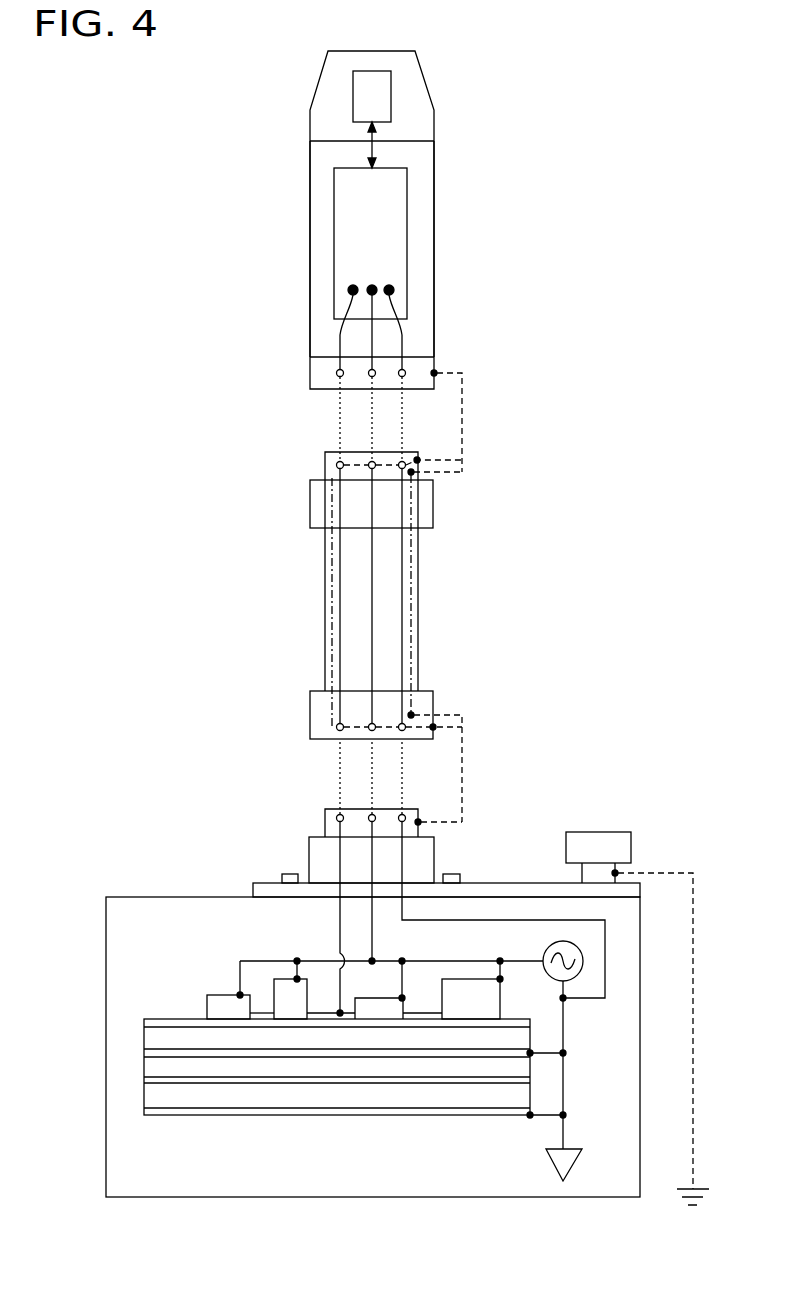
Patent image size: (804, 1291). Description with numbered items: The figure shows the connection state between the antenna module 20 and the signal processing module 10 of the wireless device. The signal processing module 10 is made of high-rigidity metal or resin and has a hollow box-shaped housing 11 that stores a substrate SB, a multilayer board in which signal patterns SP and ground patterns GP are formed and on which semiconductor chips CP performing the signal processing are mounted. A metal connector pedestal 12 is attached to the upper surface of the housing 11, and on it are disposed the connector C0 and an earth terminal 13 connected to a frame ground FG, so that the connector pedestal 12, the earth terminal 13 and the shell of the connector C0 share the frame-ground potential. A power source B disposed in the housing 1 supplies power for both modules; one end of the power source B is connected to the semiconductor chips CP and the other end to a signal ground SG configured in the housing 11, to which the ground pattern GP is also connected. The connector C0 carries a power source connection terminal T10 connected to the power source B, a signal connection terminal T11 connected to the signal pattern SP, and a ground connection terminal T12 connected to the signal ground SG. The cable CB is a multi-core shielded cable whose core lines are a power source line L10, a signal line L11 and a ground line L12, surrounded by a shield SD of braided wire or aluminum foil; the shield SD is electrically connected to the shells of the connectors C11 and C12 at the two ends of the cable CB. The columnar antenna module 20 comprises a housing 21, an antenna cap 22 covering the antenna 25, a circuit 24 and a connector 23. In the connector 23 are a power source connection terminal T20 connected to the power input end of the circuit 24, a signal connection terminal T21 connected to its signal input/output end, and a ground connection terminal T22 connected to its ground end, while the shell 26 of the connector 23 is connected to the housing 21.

The housing 1 is at (630, 140).
The signal processing module 10 is at (80, 874).
The housing 11 is at (106, 990).
The connector pedestal 12 is at (513, 893).
The earth terminal 13 is at (610, 832).
The antenna module 20 is at (247, 107).
The housing 21 is at (434, 230).
The antenna cap 22 is at (424, 78).
The connector 23 is at (436, 364).
The circuit 24 is at (334, 216).
The antenna 25 is at (375, 86).
The shell 26 is at (438, 373).
The power source connection terminal T20 is at (369, 377).
The signal connection terminal T21 is at (336, 374).
The ground connection terminal T22 is at (405, 378).
The power source connection terminal T10 is at (369, 815).
The signal connection terminal T11 is at (337, 819).
The ground connection terminal T12 is at (405, 813).
The connector C12 is at (310, 505).
The connector C11 is at (310, 718).
The connector C0 is at (309, 857).
The cable CB is at (265, 600).
The shield SD is at (413, 503).
The power source line L10 is at (372, 643).
The signal line L11 is at (340, 560).
The ground line L12 is at (406, 595).
The semiconductor chip CP is at (221, 995).
The signal pattern SP is at (423, 1013).
The ground pattern GP is at (432, 1116).
The substrate SB is at (193, 1129).
The power source B is at (545, 950).
The signal ground SG is at (577, 1085).
The frame ground FG is at (674, 1039).